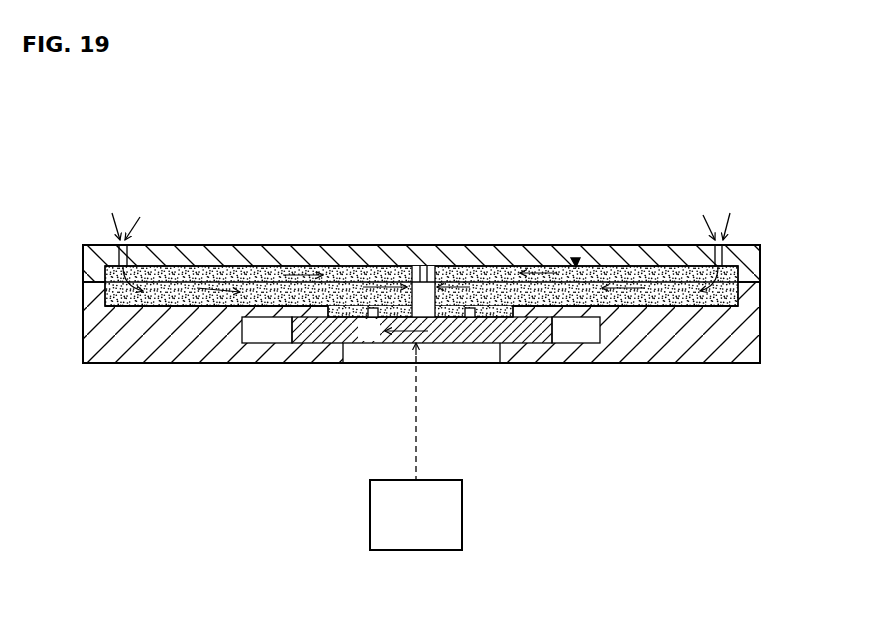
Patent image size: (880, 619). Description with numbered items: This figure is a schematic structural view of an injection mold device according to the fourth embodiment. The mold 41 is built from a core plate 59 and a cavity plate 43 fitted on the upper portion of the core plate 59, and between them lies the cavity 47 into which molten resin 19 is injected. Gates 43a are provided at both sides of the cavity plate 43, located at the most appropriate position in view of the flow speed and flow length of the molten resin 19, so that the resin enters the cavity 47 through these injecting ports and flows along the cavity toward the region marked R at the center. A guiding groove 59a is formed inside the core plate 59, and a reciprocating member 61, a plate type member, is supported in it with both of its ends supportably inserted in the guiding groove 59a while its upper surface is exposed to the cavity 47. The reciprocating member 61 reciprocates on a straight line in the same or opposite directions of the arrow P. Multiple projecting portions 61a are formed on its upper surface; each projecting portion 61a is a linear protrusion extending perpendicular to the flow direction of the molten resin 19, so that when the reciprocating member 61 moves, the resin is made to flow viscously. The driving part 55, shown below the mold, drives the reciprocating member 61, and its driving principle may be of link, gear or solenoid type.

The mold 41 is at (406, 300).
The cavity plate 43 is at (300, 253).
The gate 43a is at (122, 270).
The cavity 47 is at (576, 258).
The outlet / reaction region R is at (422, 264).
The molten resin 19 is at (585, 290).
The core plate 59 is at (421, 363).
The guiding groove 59a is at (262, 333).
The reciprocating member 61 is at (419, 384).
The projecting portion 61a is at (487, 310).
The driving part 55 is at (440, 515).